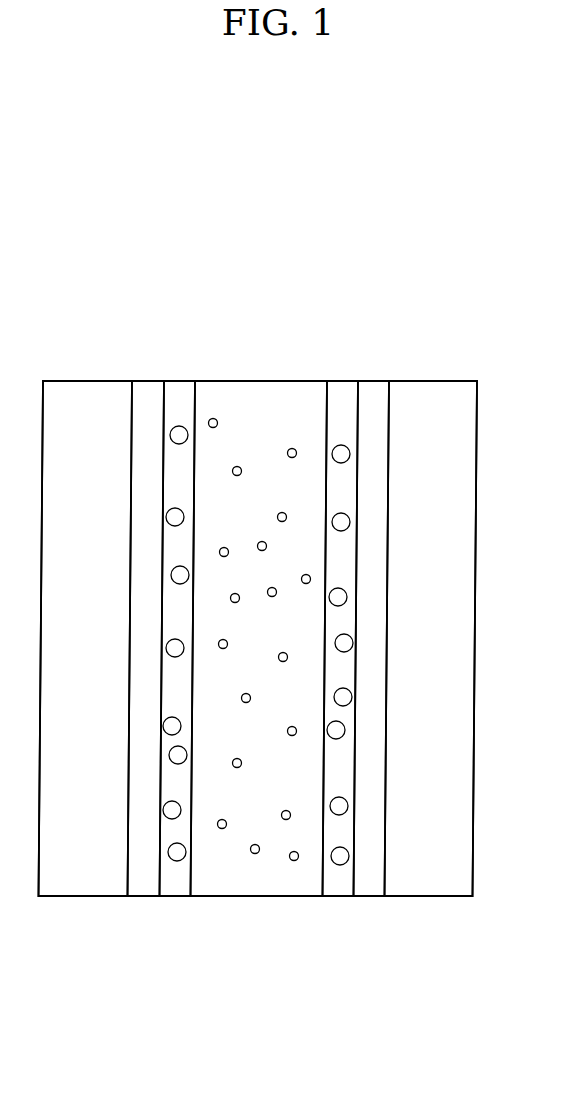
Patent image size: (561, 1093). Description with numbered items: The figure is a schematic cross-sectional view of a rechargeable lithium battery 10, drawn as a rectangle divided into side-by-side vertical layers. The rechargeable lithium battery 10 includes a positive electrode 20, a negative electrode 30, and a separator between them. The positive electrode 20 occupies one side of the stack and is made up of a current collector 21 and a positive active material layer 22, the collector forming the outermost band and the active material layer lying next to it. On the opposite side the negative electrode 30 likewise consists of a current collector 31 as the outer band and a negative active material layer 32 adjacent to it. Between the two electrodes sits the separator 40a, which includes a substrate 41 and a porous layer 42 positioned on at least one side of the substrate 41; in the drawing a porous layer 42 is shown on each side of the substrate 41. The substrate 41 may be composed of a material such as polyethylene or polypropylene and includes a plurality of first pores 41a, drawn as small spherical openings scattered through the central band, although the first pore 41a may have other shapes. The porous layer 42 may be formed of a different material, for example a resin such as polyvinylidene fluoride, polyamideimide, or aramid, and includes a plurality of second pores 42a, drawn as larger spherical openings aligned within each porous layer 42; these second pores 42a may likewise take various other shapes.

The rechargeable lithium battery 10 is at (247, 167).
The positive electrode 20 is at (160, 331).
The current collector 21 is at (94, 390).
The positive active material layer 22 is at (138, 390).
The negative electrode 30 is at (442, 331).
The current collector 31 is at (421, 390).
The negative active material layer 32 is at (377, 390).
The separator 40a is at (175, 331).
The substrate 41 is at (232, 390).
The first pore 41a is at (294, 861).
The porous layer 42 is at (187, 390).
The second pore 42a is at (342, 866).